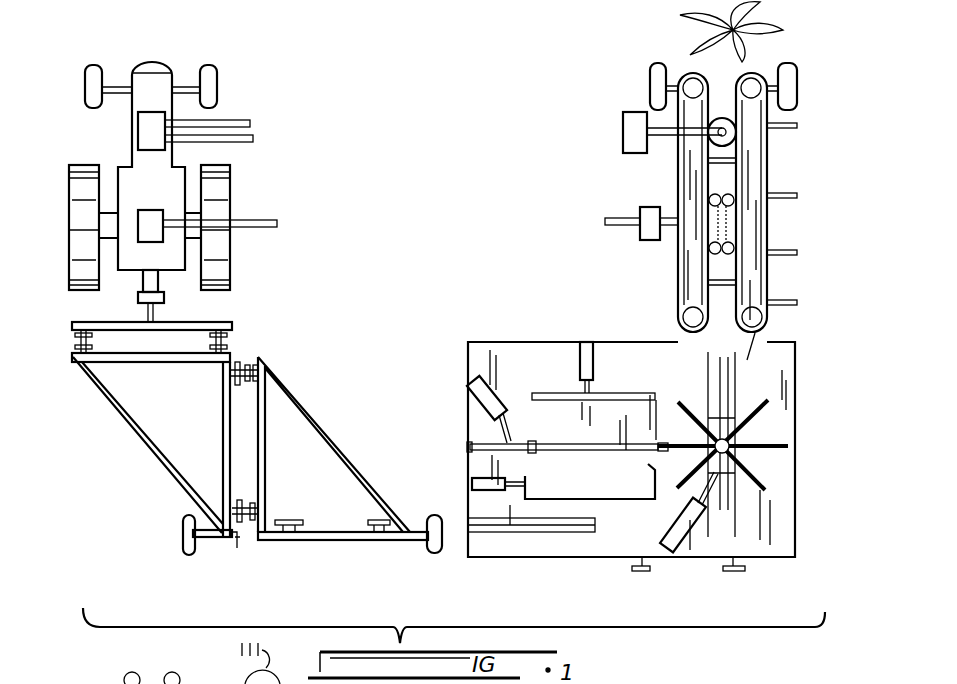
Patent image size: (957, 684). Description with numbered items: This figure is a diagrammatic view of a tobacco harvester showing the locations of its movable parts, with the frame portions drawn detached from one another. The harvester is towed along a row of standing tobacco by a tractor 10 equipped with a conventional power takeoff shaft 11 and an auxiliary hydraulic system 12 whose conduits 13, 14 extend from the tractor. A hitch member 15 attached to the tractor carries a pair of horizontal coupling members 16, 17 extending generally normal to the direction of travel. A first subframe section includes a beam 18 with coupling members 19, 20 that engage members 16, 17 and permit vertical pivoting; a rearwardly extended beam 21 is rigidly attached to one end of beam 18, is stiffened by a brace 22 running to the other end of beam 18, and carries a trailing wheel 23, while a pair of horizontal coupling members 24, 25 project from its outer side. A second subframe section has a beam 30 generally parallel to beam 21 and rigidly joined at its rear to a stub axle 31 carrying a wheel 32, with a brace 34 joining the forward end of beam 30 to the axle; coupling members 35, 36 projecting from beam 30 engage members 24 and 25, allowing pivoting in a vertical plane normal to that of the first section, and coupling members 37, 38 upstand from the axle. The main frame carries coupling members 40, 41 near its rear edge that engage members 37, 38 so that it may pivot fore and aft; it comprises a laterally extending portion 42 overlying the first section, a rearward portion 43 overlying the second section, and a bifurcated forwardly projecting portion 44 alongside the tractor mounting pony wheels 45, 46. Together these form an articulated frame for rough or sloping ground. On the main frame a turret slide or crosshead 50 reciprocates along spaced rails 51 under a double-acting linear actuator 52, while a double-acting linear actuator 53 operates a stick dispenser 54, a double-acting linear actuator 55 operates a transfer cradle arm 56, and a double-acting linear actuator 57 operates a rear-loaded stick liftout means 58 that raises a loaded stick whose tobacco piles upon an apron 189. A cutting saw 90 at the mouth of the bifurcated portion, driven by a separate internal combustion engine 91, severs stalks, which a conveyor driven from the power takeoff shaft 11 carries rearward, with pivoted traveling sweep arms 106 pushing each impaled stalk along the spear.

The tractor 10 is at (152, 76).
The power takeoff shaft 11 is at (256, 229).
The auxiliary hydraulic system 12 is at (150, 138).
The conduit 13 is at (243, 122).
The conduit 14 is at (237, 142).
The hitch member 15 is at (154, 316).
The horizontal coupling member 16 is at (75, 334).
The horizontal coupling member 17 is at (232, 334).
The beam 18 is at (172, 362).
The coupling member 19 is at (75, 347).
The coupling member 20 is at (226, 352).
The rearwardly extended beam 21 is at (223, 450).
The brace 22 is at (146, 452).
The trailing wheel 23 is at (185, 540).
The horizontal coupling member 24 is at (229, 390).
The horizontal coupling member 25 is at (236, 546).
The beam 30 is at (262, 465).
The stub axle 31 is at (322, 540).
The wheel 32 is at (432, 548).
The brace 34 is at (338, 446).
The horizontal coupling member 35 is at (250, 395).
The horizontal coupling member 36 is at (258, 512).
The coupling member 37 is at (295, 535).
The coupling member 38 is at (368, 535).
The horizontal coupling member 40 is at (642, 572).
The horizontal coupling member 41 is at (733, 573).
The laterally extending portion 42 is at (525, 345).
The rearward portion 43 is at (768, 550).
The bifurcated forwardly projecting portion 44 is at (775, 230).
The pony wheel 45 is at (650, 88).
The pony wheel 46 is at (796, 75).
The turret slide or crosshead 50 is at (738, 442).
The spaced rails 51 is at (735, 385).
The double-acting linear actuator 52 is at (668, 538).
The double-acting linear actuator 53 is at (593, 366).
The stick dispenser 54 is at (556, 394).
The double-acting linear actuator 55 is at (507, 480).
The transfer cradle arm 56 is at (625, 493).
The double-acting linear actuator 57 is at (470, 395).
The rear-loaded stick liftout means 58 is at (518, 442).
The cutting saw 90 is at (720, 118).
The internal combustion engine 91 is at (623, 138).
The traveling sweep arms 106 is at (776, 129).
The apron 189 is at (520, 542).